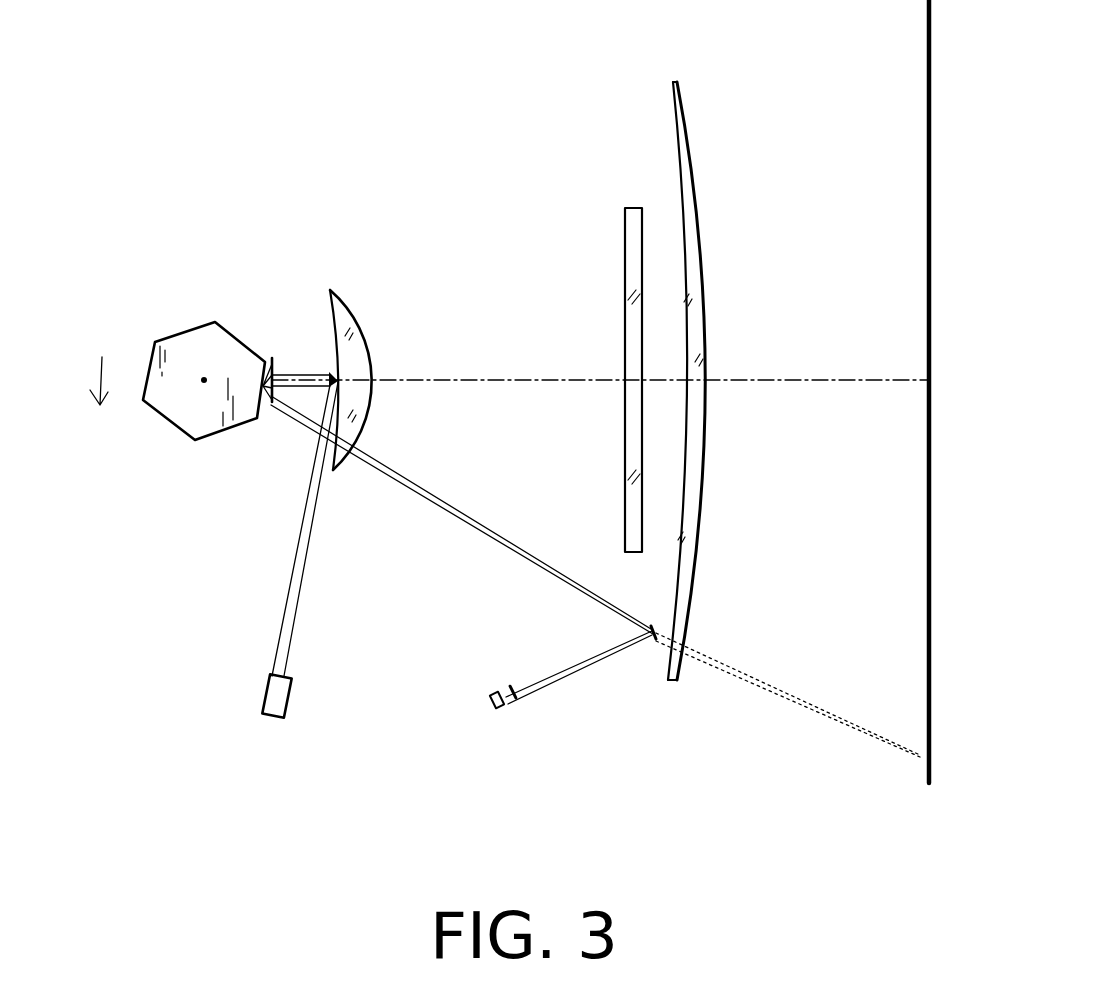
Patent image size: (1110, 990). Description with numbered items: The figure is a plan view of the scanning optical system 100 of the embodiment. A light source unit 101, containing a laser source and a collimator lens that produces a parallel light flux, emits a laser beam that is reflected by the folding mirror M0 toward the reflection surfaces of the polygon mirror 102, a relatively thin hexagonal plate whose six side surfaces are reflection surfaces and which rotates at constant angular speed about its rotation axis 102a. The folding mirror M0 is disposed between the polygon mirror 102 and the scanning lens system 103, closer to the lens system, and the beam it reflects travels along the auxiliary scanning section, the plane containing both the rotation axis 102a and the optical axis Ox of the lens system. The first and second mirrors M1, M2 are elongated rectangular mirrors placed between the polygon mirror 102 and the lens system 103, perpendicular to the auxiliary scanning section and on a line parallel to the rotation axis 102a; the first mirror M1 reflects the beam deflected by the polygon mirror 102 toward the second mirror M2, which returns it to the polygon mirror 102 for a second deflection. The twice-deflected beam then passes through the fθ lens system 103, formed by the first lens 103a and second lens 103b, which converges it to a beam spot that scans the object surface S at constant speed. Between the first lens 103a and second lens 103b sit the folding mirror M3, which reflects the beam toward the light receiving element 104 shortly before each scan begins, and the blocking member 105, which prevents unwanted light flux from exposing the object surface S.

The scanning optical system 100 is at (251, 121).
The light source unit 101 is at (268, 688).
The polygon mirror 102 is at (175, 336).
The rotation axis 102a is at (204, 380).
The scanning lens system 103 is at (706, 5).
The first lens 103a is at (350, 303).
The second lens 103b is at (687, 114).
The light receiving element 104 is at (488, 692).
The blocking member 105 is at (624, 224).
The folding mirror M0 is at (332, 371).
The first mirror M1 is at (274, 357).
The second mirror M2 is at (255, 311).
The folding mirror M3 is at (655, 642).
The optical axis Ox is at (785, 380).
The object surface S is at (929, 228).